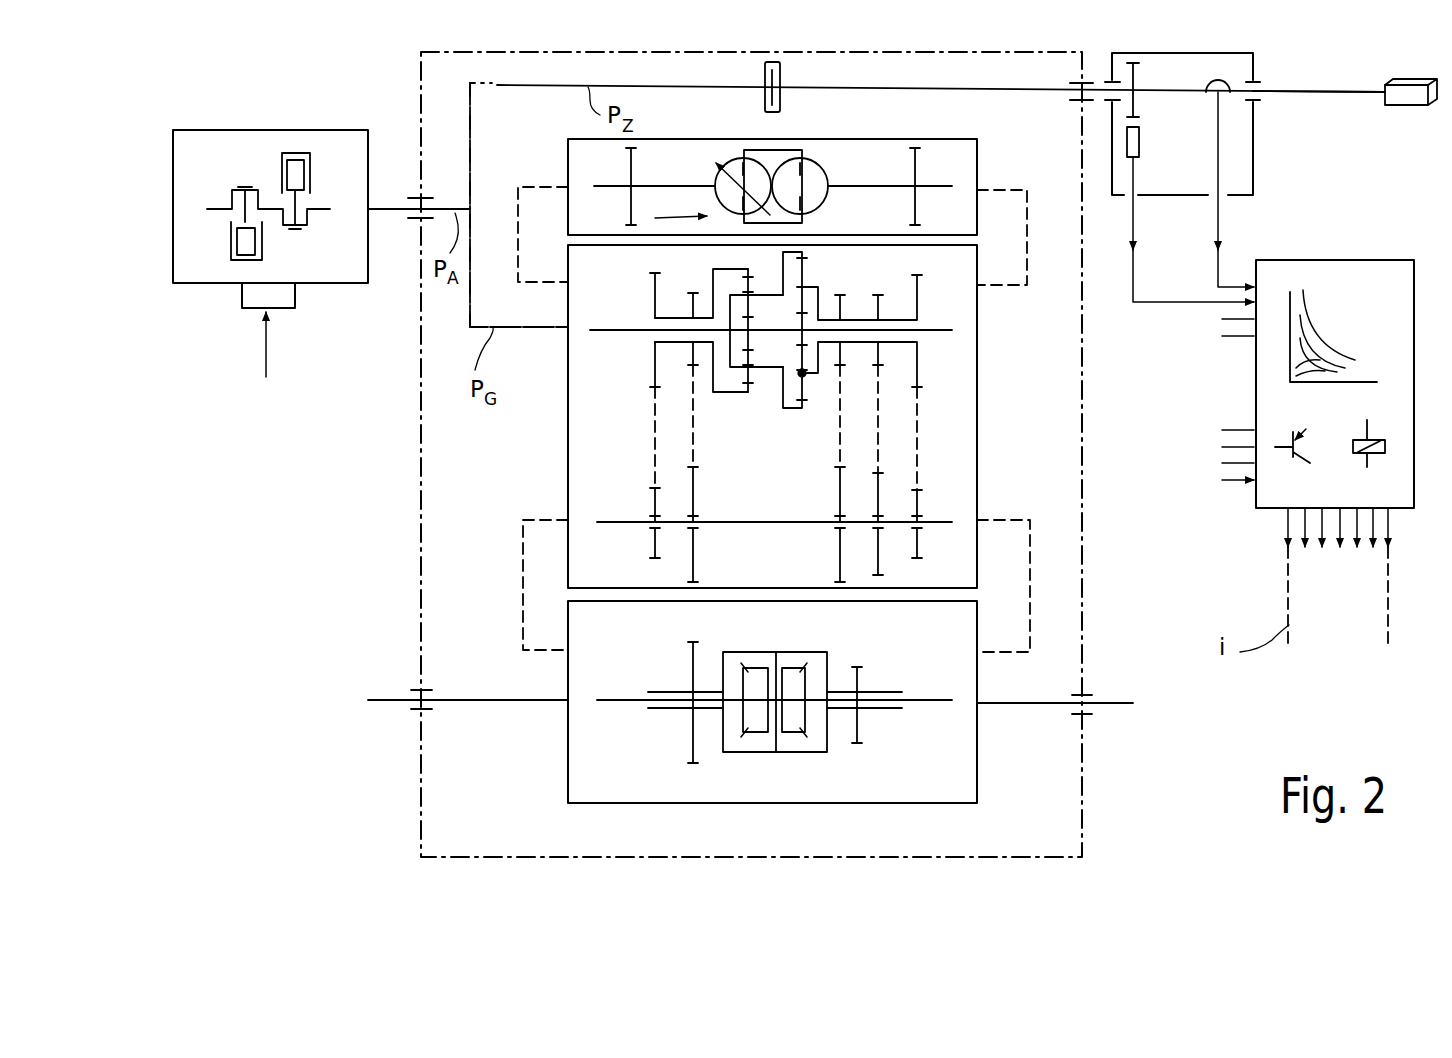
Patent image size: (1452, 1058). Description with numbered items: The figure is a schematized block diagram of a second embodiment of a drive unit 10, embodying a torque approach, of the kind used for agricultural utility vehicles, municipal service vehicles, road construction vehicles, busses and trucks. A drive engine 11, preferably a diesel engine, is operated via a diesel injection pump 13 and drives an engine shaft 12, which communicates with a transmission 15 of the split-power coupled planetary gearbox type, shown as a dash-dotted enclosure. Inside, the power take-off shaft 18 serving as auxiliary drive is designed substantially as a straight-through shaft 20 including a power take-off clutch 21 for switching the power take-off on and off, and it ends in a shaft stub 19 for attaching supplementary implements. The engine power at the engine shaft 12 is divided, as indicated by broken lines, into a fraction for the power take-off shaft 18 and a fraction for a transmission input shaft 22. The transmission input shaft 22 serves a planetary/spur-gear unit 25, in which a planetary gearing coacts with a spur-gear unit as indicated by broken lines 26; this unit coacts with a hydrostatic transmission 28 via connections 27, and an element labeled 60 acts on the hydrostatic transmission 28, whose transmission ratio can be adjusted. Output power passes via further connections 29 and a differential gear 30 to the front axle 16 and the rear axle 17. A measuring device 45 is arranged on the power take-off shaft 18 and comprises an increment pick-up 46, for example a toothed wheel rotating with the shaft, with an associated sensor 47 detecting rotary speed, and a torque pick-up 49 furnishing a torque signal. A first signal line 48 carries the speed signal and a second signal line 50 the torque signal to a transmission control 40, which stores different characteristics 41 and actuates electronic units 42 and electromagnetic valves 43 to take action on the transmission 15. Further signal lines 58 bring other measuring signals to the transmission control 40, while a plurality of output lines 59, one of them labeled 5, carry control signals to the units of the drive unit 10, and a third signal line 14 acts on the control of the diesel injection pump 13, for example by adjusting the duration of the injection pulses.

The output signal line 5 is at (1390, 618).
The drive unit 10 is at (658, 454).
The drive engine 11 is at (250, 145).
The engine shaft 12 is at (392, 212).
The diesel injection pump 13 is at (283, 298).
The third signal line 14 is at (268, 346).
The transmission 15 is at (418, 596).
The front axle 16 is at (388, 702).
The rear axle 17 is at (1122, 705).
The power take-off shaft 18 is at (1322, 90).
The shaft stub 19 is at (1403, 98).
The straight-through shaft 20 is at (530, 87).
The power take-off clutch 21 is at (780, 108).
The transmission input shaft 22 is at (533, 328).
The planetary/spur-gear unit 25 is at (744, 416).
The broken lines 26 is at (695, 428).
The connections 27 is at (518, 247).
The hydrostatic transmission 28 is at (684, 152).
The further connections 29 is at (523, 568).
The differential gear 30 is at (590, 752).
The transmission control 40 is at (1318, 381).
The characteristics 41 is at (1322, 343).
The electronic units 42 is at (1298, 435).
The electromagnetic valves 43 is at (1375, 453).
The measuring device 45 is at (1245, 155).
The increment pick-up 46 is at (1136, 98).
The sensor 47 is at (1139, 147).
The first signal line 48 is at (1135, 225).
The torque pick-up 49 is at (1208, 85).
The second signal line 50 is at (1220, 210).
The further signal lines 58 is at (1234, 495).
The output lines 59 is at (1333, 553).
The adjusting device 60 is at (680, 216).